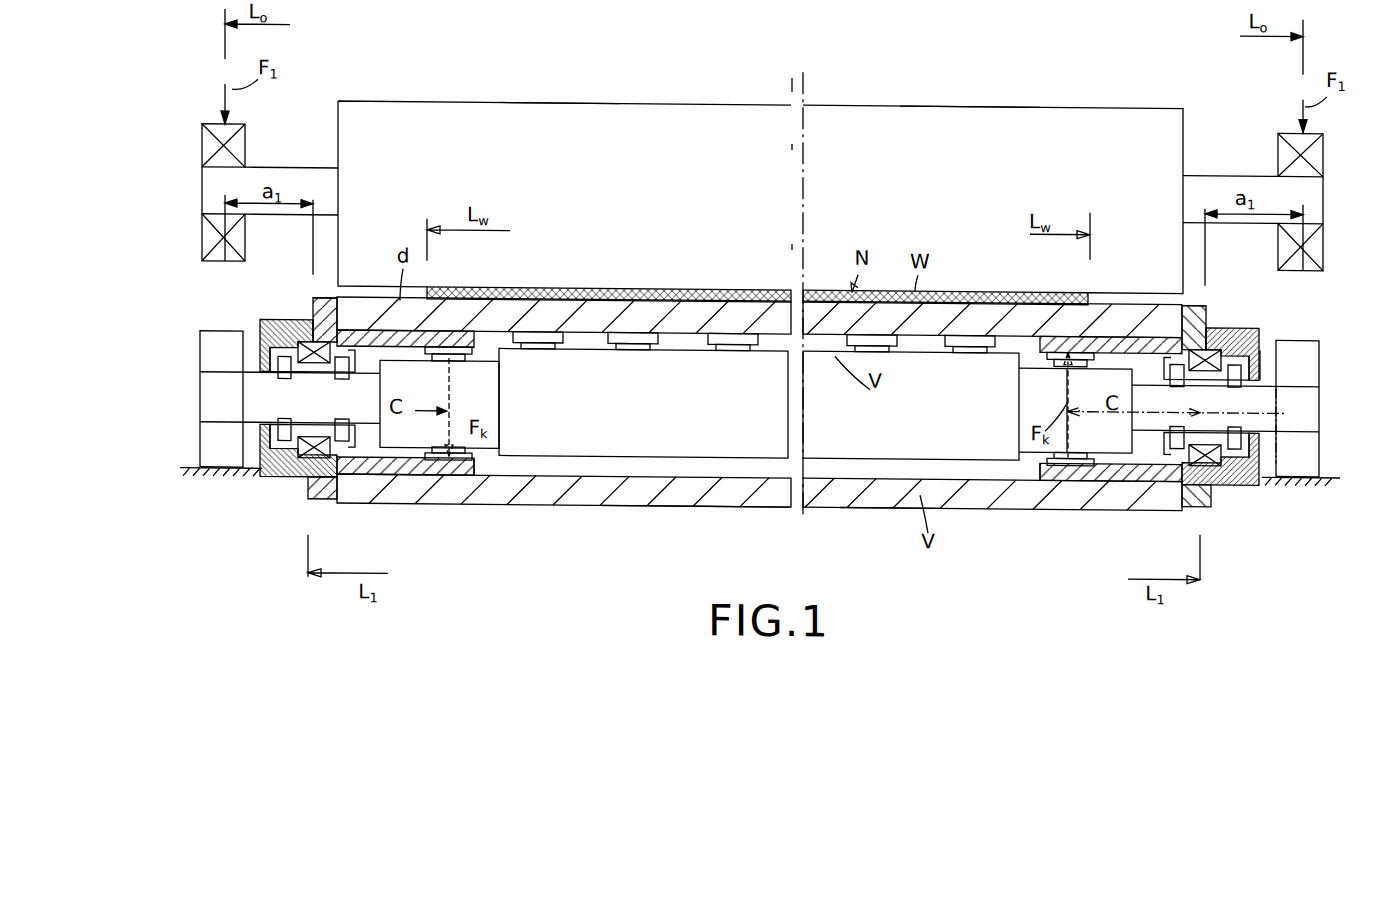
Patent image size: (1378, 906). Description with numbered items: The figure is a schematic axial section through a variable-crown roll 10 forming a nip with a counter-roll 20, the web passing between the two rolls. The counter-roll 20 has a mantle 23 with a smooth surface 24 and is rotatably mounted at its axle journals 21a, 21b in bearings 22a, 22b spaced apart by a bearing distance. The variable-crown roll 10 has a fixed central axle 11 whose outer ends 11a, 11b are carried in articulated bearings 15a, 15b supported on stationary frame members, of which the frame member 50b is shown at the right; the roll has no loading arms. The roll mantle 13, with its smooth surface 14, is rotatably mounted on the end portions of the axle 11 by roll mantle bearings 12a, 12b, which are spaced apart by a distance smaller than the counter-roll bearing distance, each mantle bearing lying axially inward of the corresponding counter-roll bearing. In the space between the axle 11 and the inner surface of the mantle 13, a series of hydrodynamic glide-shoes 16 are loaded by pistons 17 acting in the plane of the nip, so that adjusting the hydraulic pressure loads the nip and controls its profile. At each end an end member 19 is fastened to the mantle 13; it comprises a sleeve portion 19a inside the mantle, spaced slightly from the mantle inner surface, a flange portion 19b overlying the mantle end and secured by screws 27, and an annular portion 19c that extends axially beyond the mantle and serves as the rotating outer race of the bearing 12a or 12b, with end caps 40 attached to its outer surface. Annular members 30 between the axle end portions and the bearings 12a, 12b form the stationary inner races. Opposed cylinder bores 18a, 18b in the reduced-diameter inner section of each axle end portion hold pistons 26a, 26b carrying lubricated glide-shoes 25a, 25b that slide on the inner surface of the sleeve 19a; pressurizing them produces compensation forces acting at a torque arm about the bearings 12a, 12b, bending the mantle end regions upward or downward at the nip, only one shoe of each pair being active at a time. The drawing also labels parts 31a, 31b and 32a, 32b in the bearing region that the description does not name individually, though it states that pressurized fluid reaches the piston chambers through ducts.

The variable-crown roll 10 is at (746, 498).
The central axle 11 is at (495, 425).
The outer end of axle end portion 11a is at (230, 420).
The outer end of axle end portion 11b is at (1280, 480).
The roll mantle bearing 12a is at (262, 332).
The roll mantle bearing 12b is at (1230, 480).
The roll mantle 13 is at (675, 498).
The smooth surface 14 is at (891, 495).
The articulated bearing 15a is at (218, 470).
The articulated bearing 15b is at (1305, 450).
The hydrodynamic glide-shoe 16 is at (560, 343).
The piston 17 is at (545, 349).
The cylinder bore 18a is at (313, 320).
The cylinder bore 18b is at (1262, 330).
The end member 19 is at (358, 298).
The sleeve portion 19a is at (470, 332).
The flange portion 19b is at (318, 500).
The annular portion 19c is at (300, 500).
The counter-roll 20 is at (640, 117).
The axle journal 21a is at (300, 168).
The axle journal 21b is at (1210, 165).
The bearing 22a is at (262, 128).
The bearing 22b is at (1280, 128).
The mantle 23 is at (970, 82).
The smooth surface 24 is at (564, 96).
The glide-shoe 25a is at (478, 463).
The glide-shoe 25b is at (1085, 465).
The piston 26a is at (455, 465).
The piston 26b is at (495, 350).
The screw 27 is at (300, 300).
The annular member 30 is at (1345, 330).
The bearing ring 31a is at (345, 430).
The bearing ring 31b is at (286, 378).
The bearing 32a is at (345, 375).
The bearing 32b is at (318, 365).
The end cap 40 is at (1265, 335).
The stationary frame member 50b is at (1326, 426).